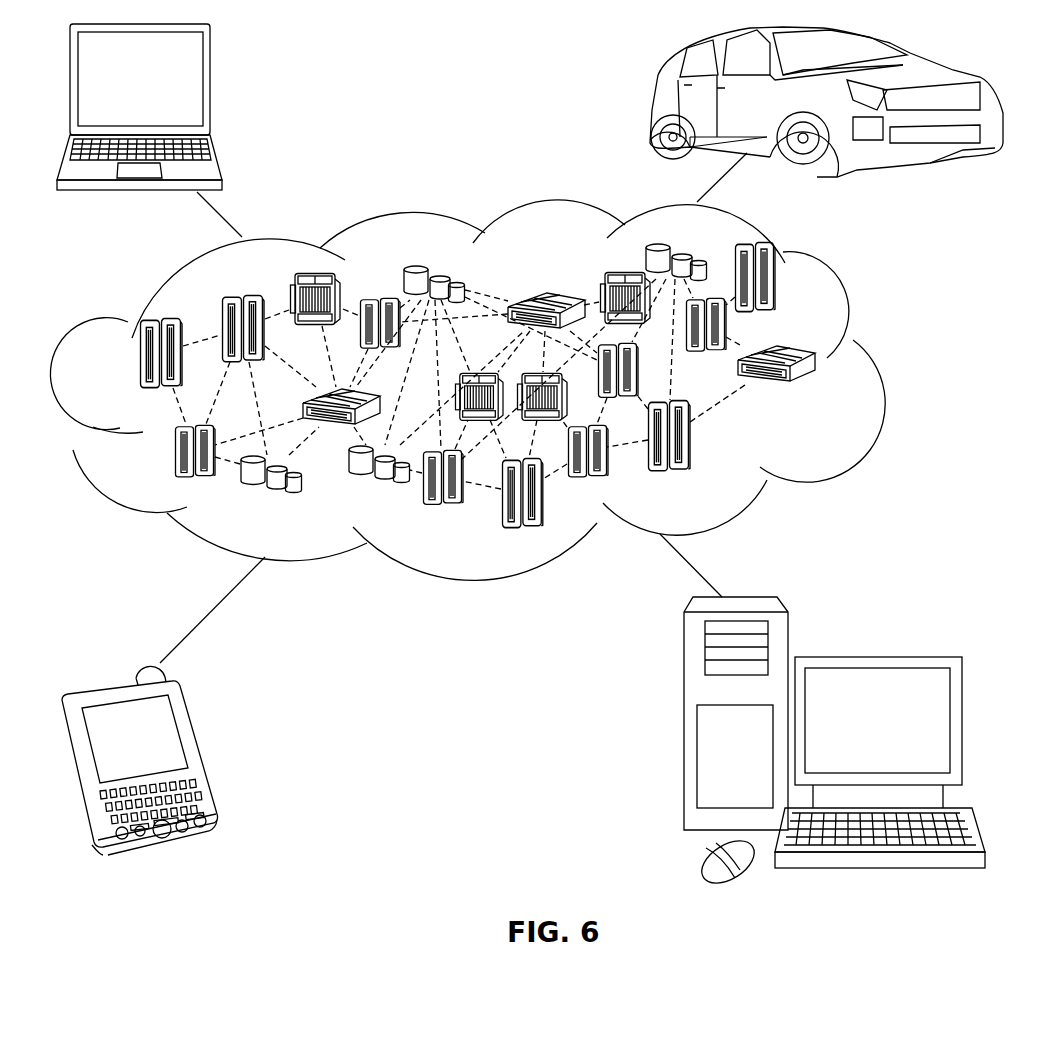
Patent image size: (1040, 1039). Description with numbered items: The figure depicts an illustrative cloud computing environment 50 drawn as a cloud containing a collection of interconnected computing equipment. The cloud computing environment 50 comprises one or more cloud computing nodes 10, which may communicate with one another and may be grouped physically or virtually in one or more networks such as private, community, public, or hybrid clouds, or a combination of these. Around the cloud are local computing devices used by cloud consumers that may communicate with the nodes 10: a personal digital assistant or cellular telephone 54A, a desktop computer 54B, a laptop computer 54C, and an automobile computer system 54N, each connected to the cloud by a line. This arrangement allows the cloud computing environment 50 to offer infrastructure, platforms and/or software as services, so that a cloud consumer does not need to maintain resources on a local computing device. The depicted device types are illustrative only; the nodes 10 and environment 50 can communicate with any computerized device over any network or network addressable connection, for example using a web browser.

The cloud computing node 10 is at (818, 391).
The cloud computing environment 50 is at (882, 362).
The personal digital assistant (PDA) or cellular telephone 54A is at (202, 752).
The desktop computer 54B is at (875, 654).
The laptop computer 54C is at (212, 88).
The automobile computer system 54N is at (651, 103).